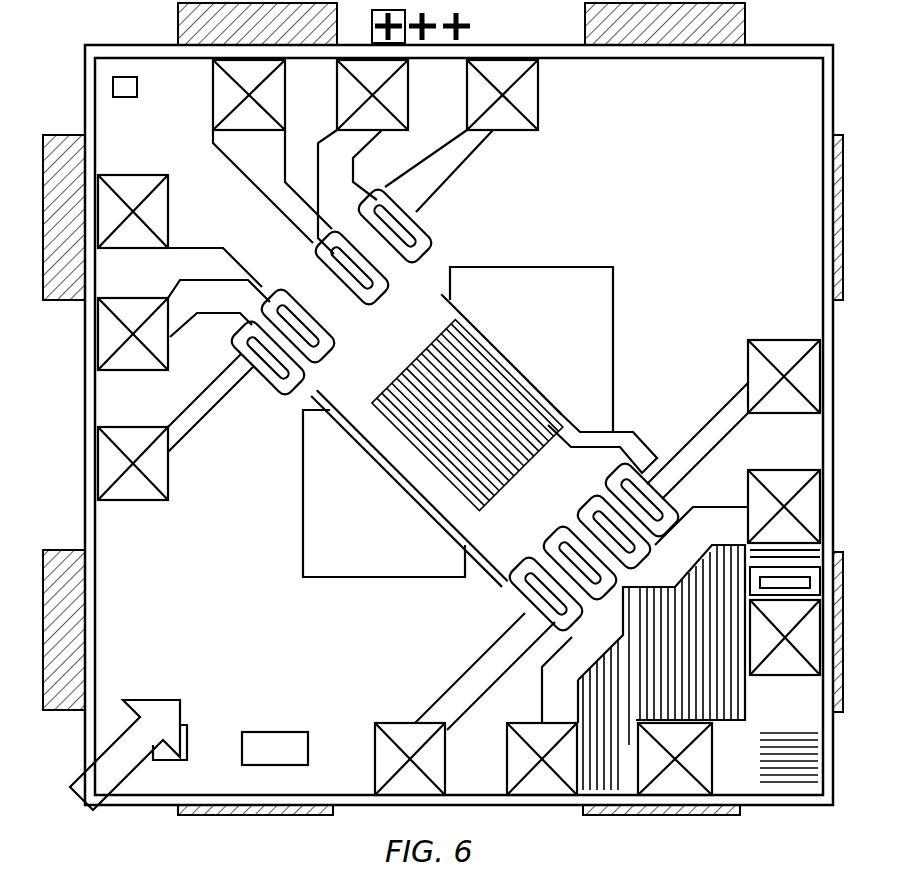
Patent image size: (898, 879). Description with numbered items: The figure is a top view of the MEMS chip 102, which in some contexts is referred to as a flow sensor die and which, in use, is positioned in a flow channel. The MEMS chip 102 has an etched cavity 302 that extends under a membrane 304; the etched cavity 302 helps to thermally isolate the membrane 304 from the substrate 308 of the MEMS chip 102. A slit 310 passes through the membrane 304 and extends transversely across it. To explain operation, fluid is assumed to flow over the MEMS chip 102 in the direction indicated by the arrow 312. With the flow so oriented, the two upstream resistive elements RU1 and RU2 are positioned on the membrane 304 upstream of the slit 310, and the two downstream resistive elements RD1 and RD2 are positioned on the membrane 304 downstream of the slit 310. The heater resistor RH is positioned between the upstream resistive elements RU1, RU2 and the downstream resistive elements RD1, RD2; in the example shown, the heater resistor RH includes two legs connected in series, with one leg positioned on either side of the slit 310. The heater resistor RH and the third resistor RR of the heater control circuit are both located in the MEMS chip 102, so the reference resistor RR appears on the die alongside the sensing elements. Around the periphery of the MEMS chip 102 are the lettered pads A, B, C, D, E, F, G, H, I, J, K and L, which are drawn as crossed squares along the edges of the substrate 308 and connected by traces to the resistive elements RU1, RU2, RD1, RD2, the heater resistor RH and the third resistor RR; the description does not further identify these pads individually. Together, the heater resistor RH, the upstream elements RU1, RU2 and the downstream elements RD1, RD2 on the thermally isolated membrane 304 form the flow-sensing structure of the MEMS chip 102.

The MEMS chip 102 is at (790, 95).
The etched cavity 302 is at (587, 267).
The membrane 304 is at (455, 318).
The substrate 308 is at (633, 163).
The slit 310 is at (464, 433).
The arrow 312 is at (92, 770).
The downstream resistive element RD1 is at (453, 310).
The downstream resistive element RD2 is at (387, 282).
The upstream resistive element RU1 is at (333, 417).
The upstream resistive element RU2 is at (340, 415).
The heater resistor RH is at (542, 497).
The third resistor RR is at (635, 680).
The bond pad A is at (133, 483).
The bond pad B is at (133, 352).
The bond pad C is at (133, 228).
The bond pad D is at (232, 95).
The bond pad E is at (355, 95).
The bond pad F is at (522, 95).
The bond pad G is at (785, 357).
The bond pad H is at (785, 487).
The bond pad I is at (785, 658).
The bond pad J is at (700, 760).
The bond pad K is at (524, 760).
The bond pad L is at (393, 760).